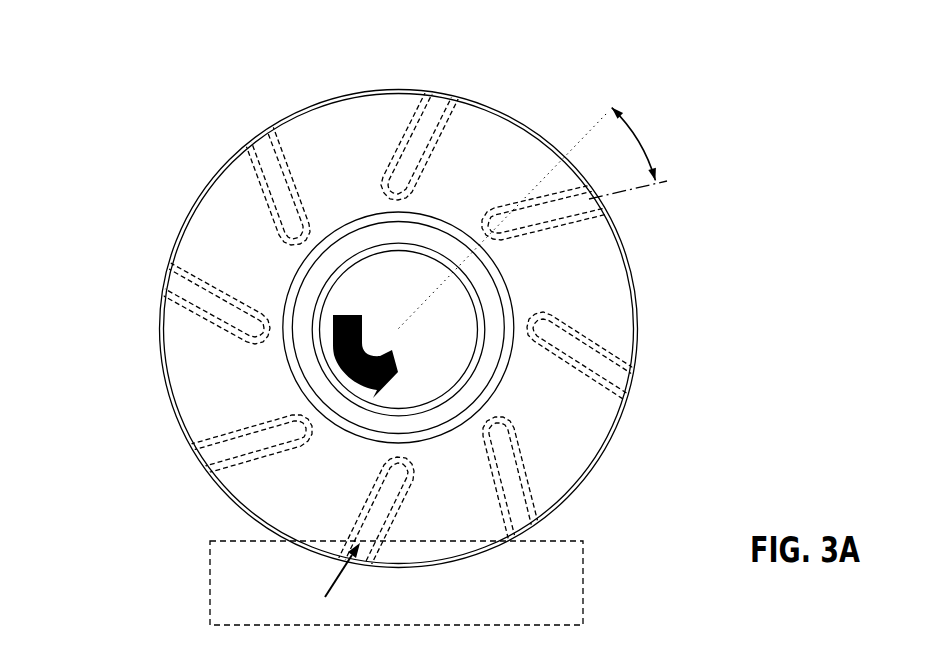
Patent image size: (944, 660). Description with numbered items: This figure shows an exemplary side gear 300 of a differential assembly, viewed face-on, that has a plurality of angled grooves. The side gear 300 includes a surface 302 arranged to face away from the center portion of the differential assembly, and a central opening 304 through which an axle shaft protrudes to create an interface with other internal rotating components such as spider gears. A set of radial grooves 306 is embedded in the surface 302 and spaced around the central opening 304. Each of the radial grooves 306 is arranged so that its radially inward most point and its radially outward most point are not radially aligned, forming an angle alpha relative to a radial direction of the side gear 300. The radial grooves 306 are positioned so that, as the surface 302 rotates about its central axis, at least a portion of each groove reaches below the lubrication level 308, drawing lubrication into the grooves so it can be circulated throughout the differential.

The side gear 300 is at (129, 38).
The surface 302 is at (232, 230).
The central opening 304 is at (452, 342).
The radial grooves 306 is at (432, 128).
The lubrication level 308 is at (587, 557).